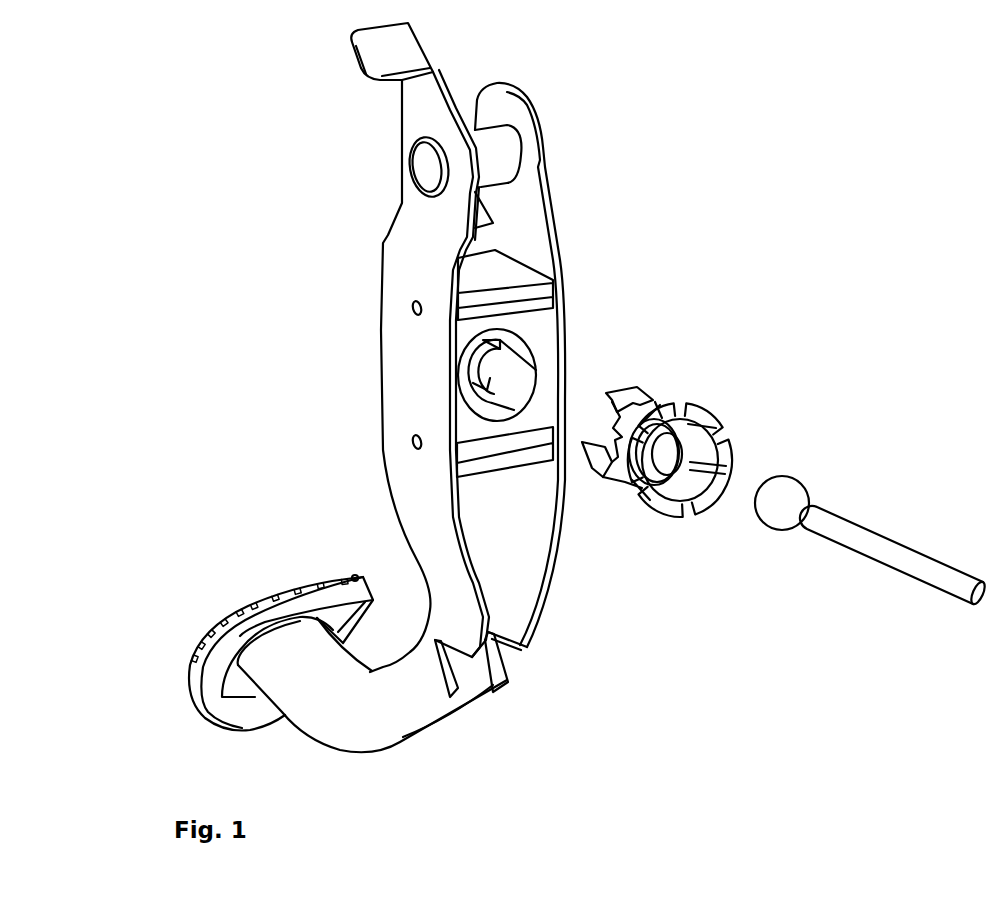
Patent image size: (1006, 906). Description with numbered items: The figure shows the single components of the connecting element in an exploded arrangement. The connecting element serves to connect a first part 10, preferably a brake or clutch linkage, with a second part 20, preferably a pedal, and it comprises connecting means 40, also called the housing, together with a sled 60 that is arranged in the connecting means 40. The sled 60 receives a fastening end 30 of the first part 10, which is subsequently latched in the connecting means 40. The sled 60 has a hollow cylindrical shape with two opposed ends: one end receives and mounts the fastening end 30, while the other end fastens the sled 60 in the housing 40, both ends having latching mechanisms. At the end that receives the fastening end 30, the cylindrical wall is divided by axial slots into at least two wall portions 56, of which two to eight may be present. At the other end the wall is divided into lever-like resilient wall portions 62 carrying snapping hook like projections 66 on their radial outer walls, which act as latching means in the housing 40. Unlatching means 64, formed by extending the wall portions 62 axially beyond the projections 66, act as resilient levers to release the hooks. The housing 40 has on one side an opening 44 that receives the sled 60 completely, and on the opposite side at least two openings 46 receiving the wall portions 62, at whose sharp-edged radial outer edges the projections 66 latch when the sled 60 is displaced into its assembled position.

The first part 10 is at (871, 556).
The second part 20 is at (380, 128).
The fastening end 30 is at (795, 488).
The connecting means 40 is at (443, 363).
The opening 44 is at (473, 408).
The openings 46 is at (473, 370).
The wall portions 56 is at (712, 405).
The sled 60 is at (682, 437).
The wall portions 62 is at (605, 462).
The unlatching means 64 is at (613, 387).
The snapping hook like projections 66 is at (593, 463).